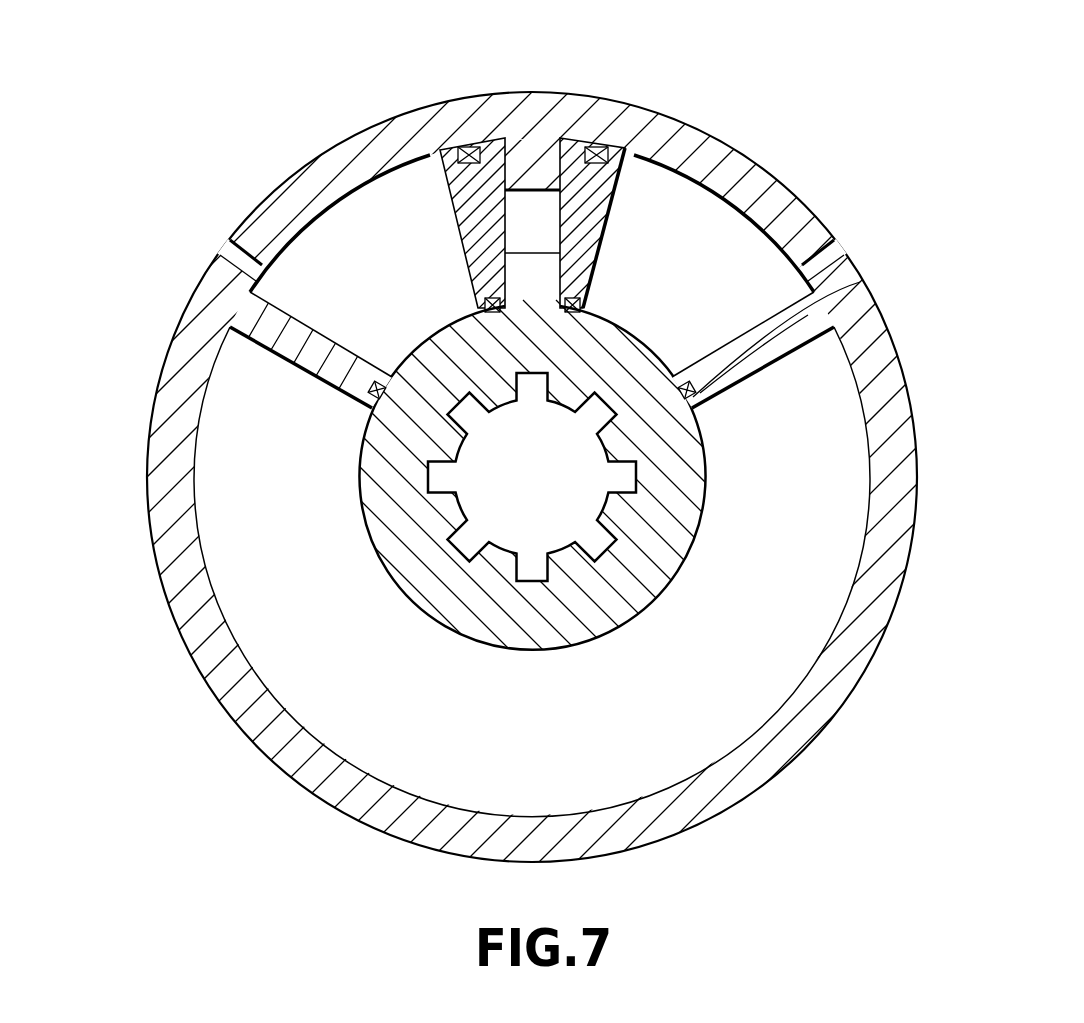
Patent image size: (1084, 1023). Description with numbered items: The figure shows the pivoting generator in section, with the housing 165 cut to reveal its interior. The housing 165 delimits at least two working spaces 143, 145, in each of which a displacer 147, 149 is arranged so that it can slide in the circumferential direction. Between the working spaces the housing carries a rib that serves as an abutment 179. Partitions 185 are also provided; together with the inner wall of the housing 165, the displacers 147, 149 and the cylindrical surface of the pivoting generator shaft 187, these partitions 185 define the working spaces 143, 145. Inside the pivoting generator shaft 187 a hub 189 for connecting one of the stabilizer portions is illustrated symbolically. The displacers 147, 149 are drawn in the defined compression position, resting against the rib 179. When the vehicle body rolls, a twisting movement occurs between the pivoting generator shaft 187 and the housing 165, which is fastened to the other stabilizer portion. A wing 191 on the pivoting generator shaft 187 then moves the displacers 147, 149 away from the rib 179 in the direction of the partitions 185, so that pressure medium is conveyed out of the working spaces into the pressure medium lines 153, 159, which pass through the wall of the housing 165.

The working space 143 is at (755, 257).
The working space 145 is at (317, 257).
The displacer 147 is at (592, 197).
The displacer 149 is at (420, 157).
The pressure medium line 153 is at (833, 257).
The pressure medium line 159 is at (228, 256).
The housing 165 is at (338, 824).
The abutment 179 is at (540, 172).
The partition 185 is at (272, 335).
The pivoting generator shaft 187 is at (390, 517).
The hub 189 is at (480, 523).
The wing 191 is at (528, 285).